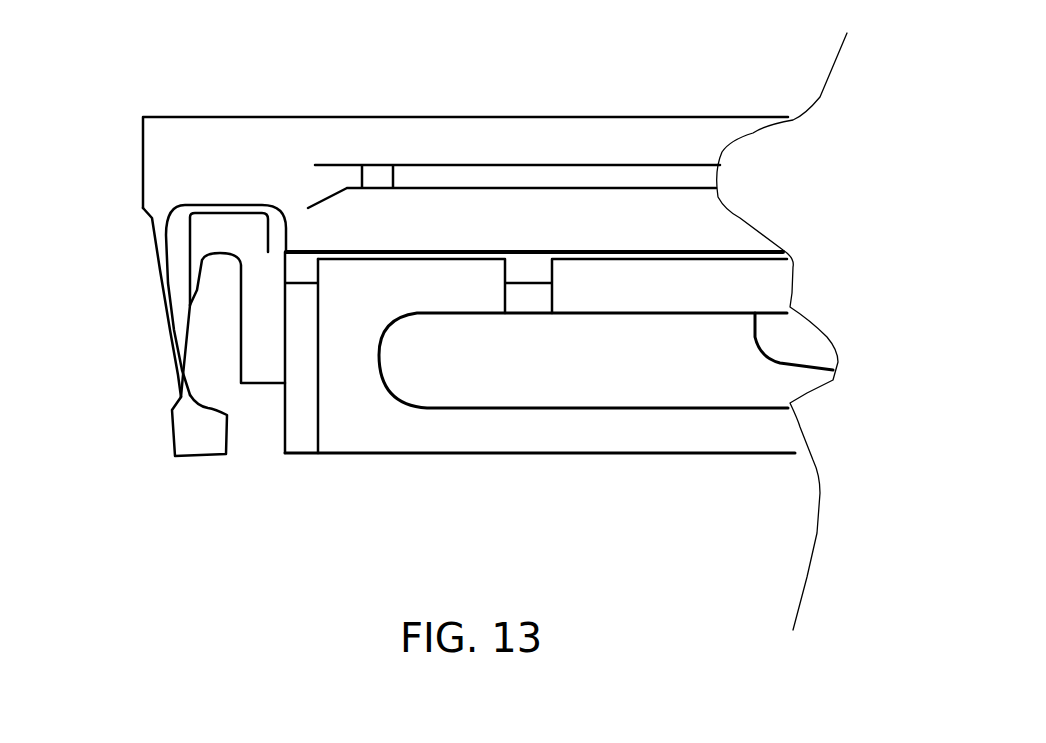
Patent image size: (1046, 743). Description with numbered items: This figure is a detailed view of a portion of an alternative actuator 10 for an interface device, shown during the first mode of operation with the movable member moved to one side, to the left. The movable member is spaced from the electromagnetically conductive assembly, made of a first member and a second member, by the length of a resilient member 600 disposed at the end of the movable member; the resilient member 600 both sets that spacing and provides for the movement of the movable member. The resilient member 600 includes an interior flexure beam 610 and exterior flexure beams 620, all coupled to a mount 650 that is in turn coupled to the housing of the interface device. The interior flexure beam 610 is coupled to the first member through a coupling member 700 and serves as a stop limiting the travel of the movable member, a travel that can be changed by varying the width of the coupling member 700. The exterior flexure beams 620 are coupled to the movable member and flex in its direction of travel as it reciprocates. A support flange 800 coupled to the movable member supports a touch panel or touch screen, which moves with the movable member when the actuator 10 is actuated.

The electrical connector assembly 10 is at (147, 36).
The contact 600 is at (150, 375).
The contact arm 610 is at (198, 310).
The contact spring portion 620 is at (168, 312).
The contact tail 650 is at (193, 443).
The spacer 700 is at (303, 445).
The latch member 800 is at (572, 170).